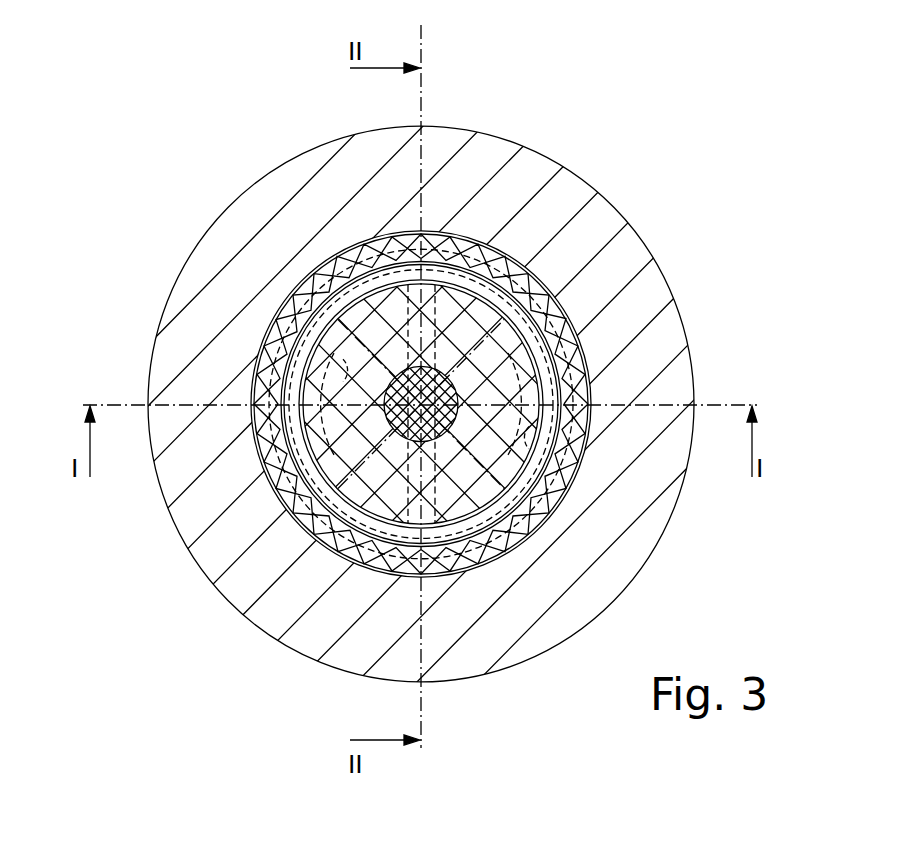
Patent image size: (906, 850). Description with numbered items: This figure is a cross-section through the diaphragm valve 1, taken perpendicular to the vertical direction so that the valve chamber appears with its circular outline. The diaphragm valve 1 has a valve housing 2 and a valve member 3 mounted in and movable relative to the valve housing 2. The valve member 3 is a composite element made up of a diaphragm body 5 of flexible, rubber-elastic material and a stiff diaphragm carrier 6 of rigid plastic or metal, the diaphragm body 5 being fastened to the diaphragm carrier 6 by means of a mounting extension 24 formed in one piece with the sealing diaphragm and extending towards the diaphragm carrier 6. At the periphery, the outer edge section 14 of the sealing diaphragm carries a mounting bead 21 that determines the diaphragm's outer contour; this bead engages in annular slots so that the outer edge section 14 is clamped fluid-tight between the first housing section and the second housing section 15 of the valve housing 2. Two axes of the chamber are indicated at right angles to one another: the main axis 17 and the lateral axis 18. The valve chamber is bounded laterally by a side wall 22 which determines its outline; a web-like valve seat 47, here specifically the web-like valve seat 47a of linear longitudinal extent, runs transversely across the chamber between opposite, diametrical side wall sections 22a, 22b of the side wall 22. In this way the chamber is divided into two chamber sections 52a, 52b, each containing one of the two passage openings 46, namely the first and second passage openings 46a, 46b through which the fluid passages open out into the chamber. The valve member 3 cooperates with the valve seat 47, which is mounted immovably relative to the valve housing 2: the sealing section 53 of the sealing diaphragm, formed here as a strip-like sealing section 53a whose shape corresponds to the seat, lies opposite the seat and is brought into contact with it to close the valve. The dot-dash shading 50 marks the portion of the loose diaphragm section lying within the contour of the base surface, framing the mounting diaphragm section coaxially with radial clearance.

The diaphragm valve 1 is at (620, 170).
The valve housing 2 is at (230, 216).
The valve member 3 is at (475, 295).
The diaphragm body 5 is at (537, 340).
The mounting extension 24 is at (450, 377).
The diaphragm carrier 6 is at (498, 327).
The outer edge section 14 is at (505, 426).
The mounting bead 21 is at (540, 520).
The second housing section 15 is at (602, 217).
The main axis 17 is at (123, 400).
The lateral axis 18 is at (424, 34).
The side wall 22 is at (421, 327).
The first side wall section 22a is at (452, 235).
The second side wall section 22b is at (460, 573).
The passage opening 46 is at (196, 444).
The first passage opening 46a is at (560, 455).
The second passage opening 46b is at (320, 455).
The valve seat 47 is at (421, 329).
The web-like valve seat 47a is at (337, 232).
The dot-dash shading 50 is at (325, 268).
The first chamber section 52a is at (560, 335).
The second chamber section 52b is at (300, 335).
The sealing section 53 is at (348, 498).
The strip-like sealing section 53a is at (333, 553).